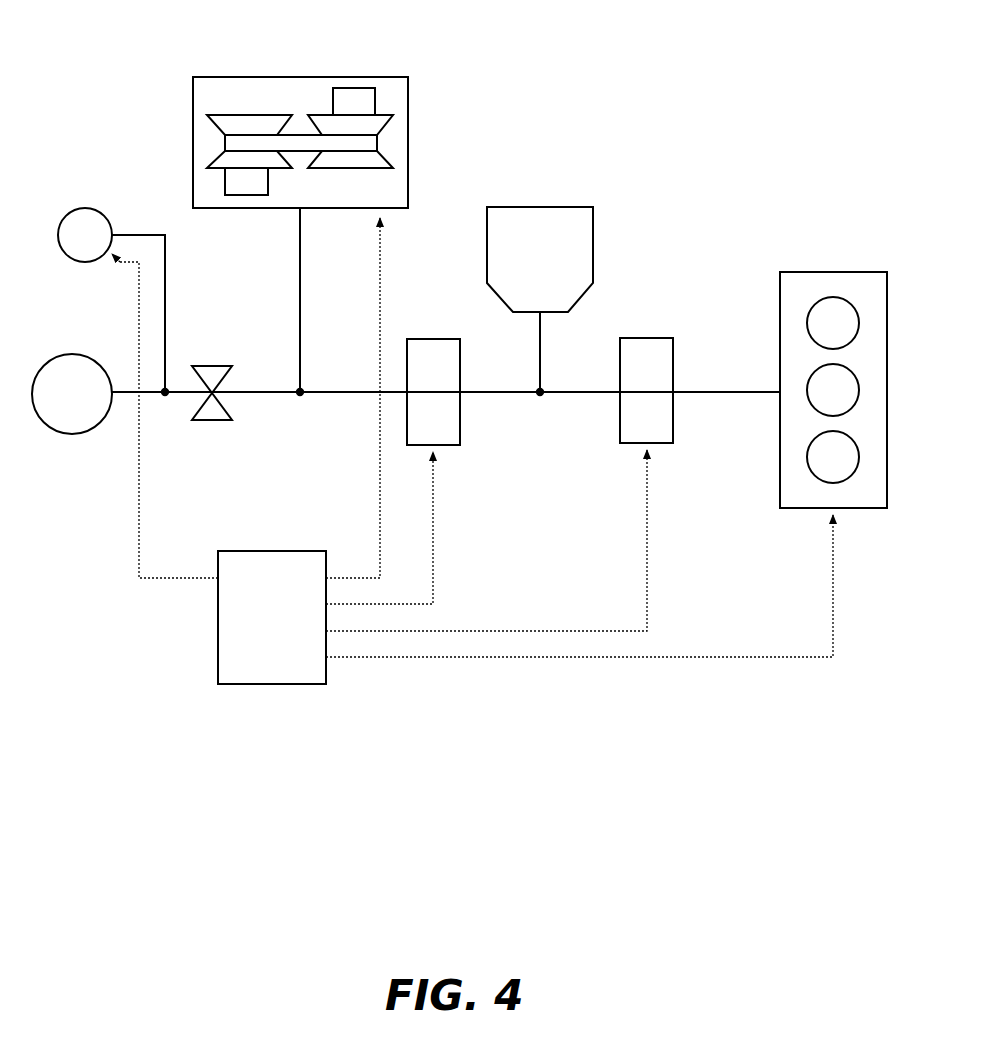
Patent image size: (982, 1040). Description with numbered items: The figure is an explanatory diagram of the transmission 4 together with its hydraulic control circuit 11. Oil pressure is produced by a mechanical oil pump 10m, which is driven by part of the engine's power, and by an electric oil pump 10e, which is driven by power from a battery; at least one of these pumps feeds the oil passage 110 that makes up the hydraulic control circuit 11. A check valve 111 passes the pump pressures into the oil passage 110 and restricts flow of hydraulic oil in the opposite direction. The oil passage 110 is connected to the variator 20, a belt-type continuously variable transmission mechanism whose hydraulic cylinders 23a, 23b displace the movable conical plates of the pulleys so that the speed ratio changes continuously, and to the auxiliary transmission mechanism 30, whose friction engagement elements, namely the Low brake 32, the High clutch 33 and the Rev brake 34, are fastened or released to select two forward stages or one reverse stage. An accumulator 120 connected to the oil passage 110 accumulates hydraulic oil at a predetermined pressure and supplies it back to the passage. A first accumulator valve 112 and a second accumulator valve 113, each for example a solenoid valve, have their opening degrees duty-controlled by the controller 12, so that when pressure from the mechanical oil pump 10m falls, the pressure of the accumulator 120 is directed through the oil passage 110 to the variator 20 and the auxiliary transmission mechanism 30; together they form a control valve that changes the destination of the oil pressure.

The transmission 4 is at (680, 174).
The electric oil pump 10e is at (82, 208).
The mechanical oil pump 10m is at (72, 354).
The hydraulic control circuit 11 is at (500, 428).
The controller 12 is at (273, 550).
The variator 20 is at (302, 201).
The hydraulic cylinder 23a is at (224, 185).
The hydraulic cylinder 23b is at (376, 100).
The auxiliary transmission mechanism 30 is at (808, 351).
The Low brake 32 is at (806, 323).
The High clutch 33 is at (806, 390).
The Rev brake 34 is at (806, 457).
The oil passage 110 is at (350, 390).
The check valve 111 is at (212, 364).
The first accumulator valve 112 is at (432, 338).
The second accumulator valve 113 is at (646, 337).
The accumulator 120 is at (538, 206).